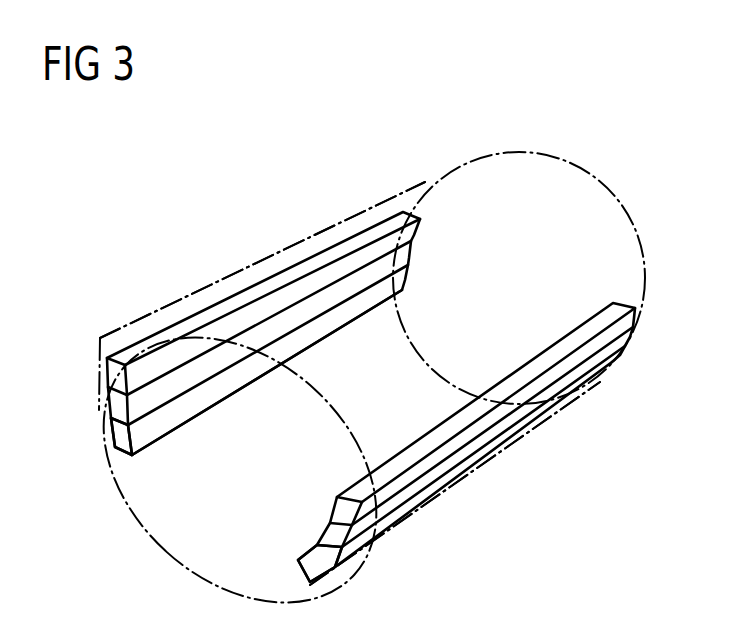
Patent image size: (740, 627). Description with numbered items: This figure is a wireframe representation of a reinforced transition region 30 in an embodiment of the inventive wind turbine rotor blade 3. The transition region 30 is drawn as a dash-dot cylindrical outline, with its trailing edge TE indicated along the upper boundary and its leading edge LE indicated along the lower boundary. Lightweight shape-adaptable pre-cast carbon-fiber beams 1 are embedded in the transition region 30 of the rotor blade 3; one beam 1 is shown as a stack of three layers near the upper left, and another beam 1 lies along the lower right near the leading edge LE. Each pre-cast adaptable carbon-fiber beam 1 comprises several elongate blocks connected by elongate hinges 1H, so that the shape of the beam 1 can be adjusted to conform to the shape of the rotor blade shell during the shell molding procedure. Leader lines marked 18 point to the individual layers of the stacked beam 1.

The transition region 30 is at (362, 156).
The trailing edge TE is at (256, 236).
The leading edge LE is at (518, 456).
The wind turbine rotor blade 3 is at (106, 371).
The pre-cast carbon-fiber beam 1 is at (112, 437).
The plate layers 18 is at (135, 369).
The hinge 1H is at (408, 488).